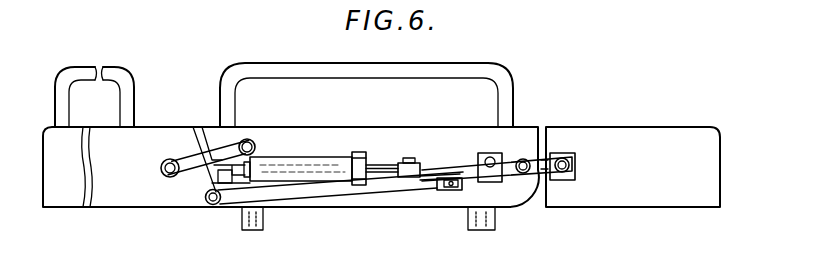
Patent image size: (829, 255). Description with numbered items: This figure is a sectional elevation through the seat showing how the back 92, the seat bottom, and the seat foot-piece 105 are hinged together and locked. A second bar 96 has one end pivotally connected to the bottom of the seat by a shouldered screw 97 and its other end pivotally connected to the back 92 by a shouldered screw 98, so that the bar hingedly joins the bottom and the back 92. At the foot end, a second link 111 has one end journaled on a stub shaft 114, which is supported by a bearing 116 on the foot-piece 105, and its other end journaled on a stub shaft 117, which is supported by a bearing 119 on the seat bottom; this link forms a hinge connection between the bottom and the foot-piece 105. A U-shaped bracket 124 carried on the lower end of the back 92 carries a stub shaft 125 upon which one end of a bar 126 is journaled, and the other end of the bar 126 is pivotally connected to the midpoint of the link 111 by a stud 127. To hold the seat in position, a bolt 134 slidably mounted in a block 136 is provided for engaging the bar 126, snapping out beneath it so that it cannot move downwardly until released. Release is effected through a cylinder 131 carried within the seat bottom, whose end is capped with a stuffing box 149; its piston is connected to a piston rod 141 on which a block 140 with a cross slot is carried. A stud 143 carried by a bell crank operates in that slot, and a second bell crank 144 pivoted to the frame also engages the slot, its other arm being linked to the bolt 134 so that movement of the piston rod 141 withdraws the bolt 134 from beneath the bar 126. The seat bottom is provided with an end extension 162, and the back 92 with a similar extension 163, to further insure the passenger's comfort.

The back 92 is at (110, 200).
The seat foot-piece 105 is at (625, 133).
The extensions 163 is at (124, 82).
The end extensions 162 is at (458, 70).
The second bar 96 is at (180, 158).
The shouldered screw 97 is at (249, 141).
The shouldered screw 98 is at (168, 174).
The U-shaped bracket 124 is at (209, 204).
The stub shaft 125 is at (215, 203).
The bar 126 is at (318, 188).
The cylinder 131 is at (313, 160).
The stuffing box 149 is at (360, 156).
The piston rod 141 is at (388, 163).
The stud 143 is at (412, 157).
The block 140 is at (419, 165).
The second bell crank 144 is at (422, 178).
The bolt 134 is at (447, 191).
The block 136 is at (459, 185).
The bearing 119 is at (483, 155).
The stub shaft 117 is at (490, 157).
The stud 127 is at (522, 160).
The second link 111 is at (547, 165).
The stub shaft 114 is at (560, 173).
The bearing 116 is at (578, 173).